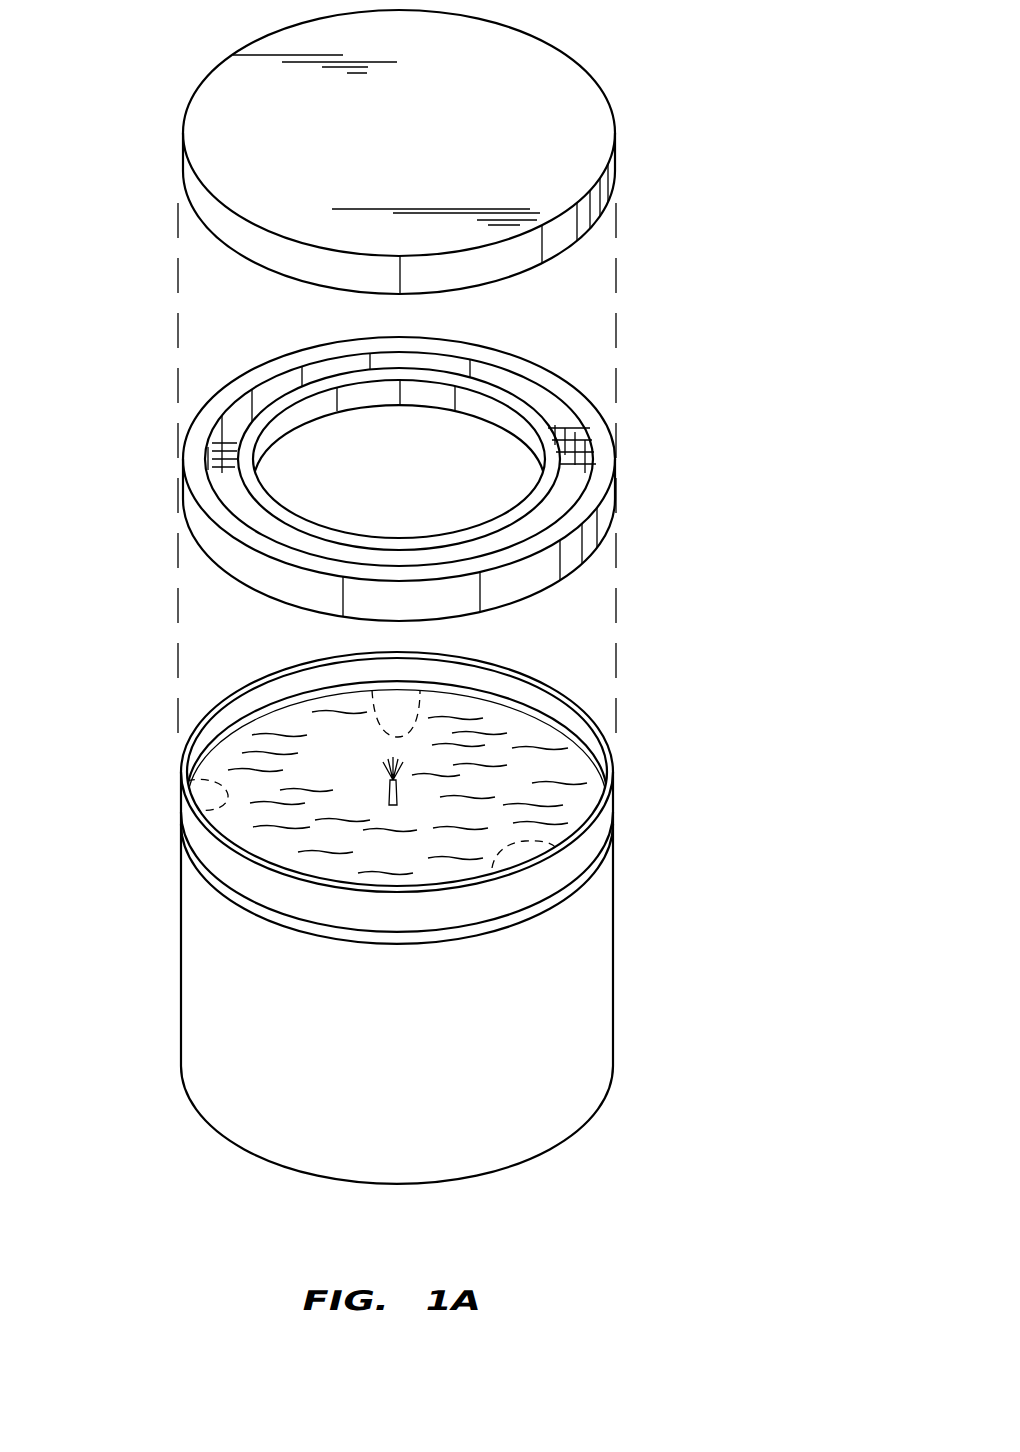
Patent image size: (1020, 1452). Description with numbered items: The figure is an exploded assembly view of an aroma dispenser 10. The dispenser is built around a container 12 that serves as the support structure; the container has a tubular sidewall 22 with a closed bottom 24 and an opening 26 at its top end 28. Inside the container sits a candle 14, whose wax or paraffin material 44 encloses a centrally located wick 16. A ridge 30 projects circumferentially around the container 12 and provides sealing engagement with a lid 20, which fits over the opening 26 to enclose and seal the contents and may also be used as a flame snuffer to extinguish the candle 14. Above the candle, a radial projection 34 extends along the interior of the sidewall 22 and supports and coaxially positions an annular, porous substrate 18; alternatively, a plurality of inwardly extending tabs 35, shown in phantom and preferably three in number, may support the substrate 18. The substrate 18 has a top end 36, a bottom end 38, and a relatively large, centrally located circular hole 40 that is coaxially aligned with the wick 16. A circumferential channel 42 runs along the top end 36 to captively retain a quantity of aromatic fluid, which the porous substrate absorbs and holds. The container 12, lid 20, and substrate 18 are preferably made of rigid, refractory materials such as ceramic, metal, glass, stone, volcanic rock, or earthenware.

The aroma dispenser 10 is at (719, 86).
The container 12 is at (387, 920).
The candle 14 is at (455, 860).
The wick 16 is at (384, 788).
The annular, porous substrate 18 is at (456, 463).
The lid 20 is at (620, 162).
The tubular sidewall 22 is at (569, 1032).
The closed bottom 24 is at (472, 1177).
The opening 26 is at (607, 764).
The top end 28 is at (567, 620).
The ridge 30 is at (200, 868).
The radial projection 34 is at (275, 710).
The inwardly extending tabs 35 is at (182, 779).
The top end 36 is at (558, 386).
The bottom end 38 is at (293, 456).
The circular hole 40 is at (462, 452).
The circumferential channel 42 is at (558, 451).
The wax or paraffin material 44 is at (550, 814).